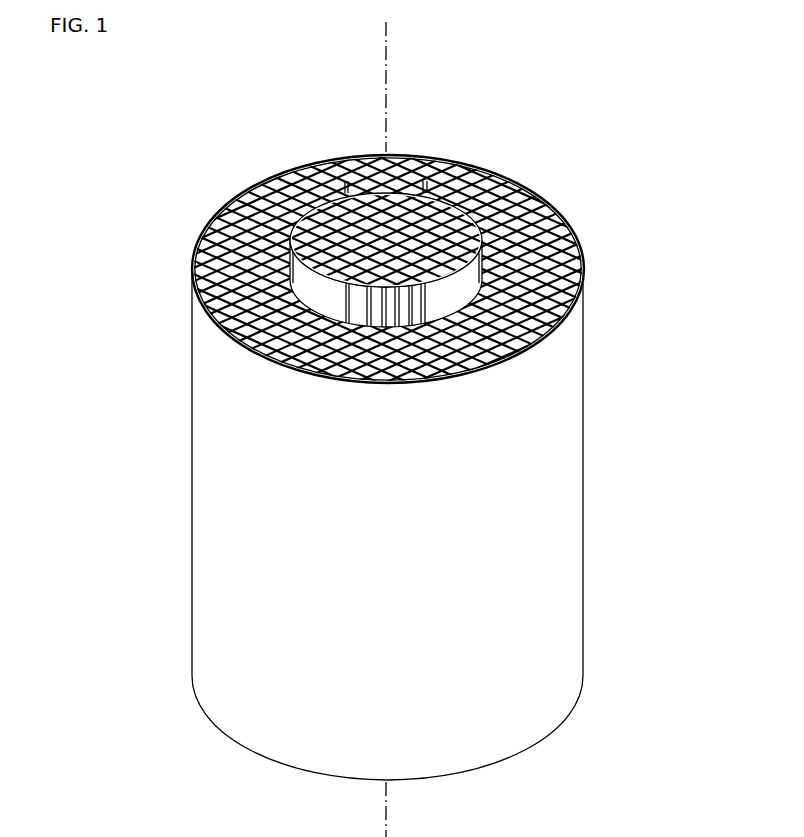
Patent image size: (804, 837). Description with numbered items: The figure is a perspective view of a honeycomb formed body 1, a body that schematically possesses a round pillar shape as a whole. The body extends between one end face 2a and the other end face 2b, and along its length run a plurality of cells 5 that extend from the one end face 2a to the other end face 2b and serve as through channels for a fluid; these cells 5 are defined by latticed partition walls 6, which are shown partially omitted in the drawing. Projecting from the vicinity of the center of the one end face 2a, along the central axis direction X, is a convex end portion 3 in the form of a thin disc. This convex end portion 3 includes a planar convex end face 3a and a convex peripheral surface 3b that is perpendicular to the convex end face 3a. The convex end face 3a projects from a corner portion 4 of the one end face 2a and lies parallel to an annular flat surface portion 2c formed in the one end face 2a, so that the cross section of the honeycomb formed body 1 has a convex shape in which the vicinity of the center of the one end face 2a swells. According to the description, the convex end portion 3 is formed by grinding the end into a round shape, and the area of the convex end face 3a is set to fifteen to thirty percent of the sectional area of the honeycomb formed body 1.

The honeycomb formed body 1 is at (408, 390).
The one end face 2a is at (408, 281).
The other end face 2b is at (578, 700).
The annular flat surface portion 2c is at (565, 320).
The convex end portion 3 is at (388, 281).
The convex end face 3a is at (353, 160).
The convex peripheral surface 3b is at (450, 302).
The corner portion 4 is at (583, 271).
The cells 5 is at (426, 281).
The partition walls 6 is at (192, 280).
The central axis direction X is at (388, 808).